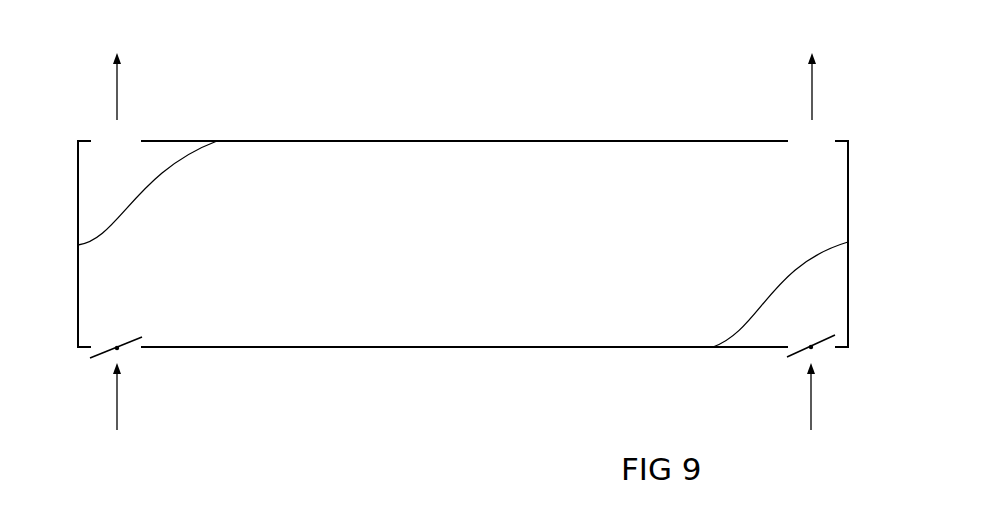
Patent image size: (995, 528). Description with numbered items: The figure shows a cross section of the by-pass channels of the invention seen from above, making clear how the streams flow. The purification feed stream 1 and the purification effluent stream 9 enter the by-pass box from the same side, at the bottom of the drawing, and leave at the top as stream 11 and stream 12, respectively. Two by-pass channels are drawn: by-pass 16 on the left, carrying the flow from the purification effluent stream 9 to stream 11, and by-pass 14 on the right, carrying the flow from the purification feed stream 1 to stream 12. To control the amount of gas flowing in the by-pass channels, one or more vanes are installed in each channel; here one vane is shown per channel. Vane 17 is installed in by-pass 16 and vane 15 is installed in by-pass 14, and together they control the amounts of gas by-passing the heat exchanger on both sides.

The purification feed stream 1 is at (811, 413).
The purification effluent stream 9 is at (118, 413).
The stream 11 is at (118, 70).
The stream 12 is at (813, 70).
The by-pass 14 is at (827, 298).
The vane 15 is at (825, 348).
The by-pass 16 is at (105, 277).
The vane 17 is at (130, 347).